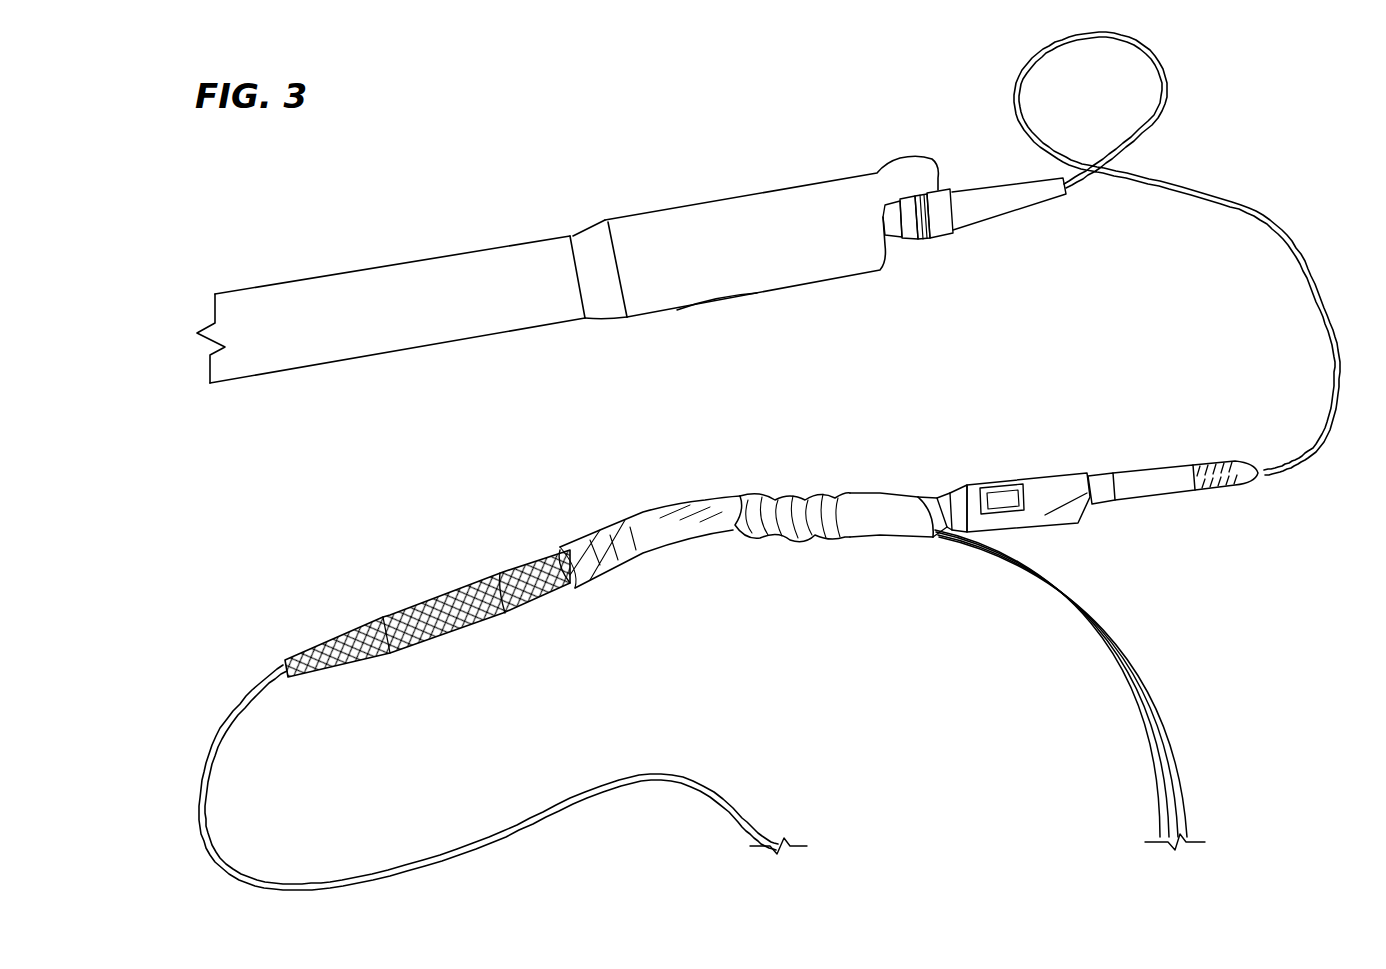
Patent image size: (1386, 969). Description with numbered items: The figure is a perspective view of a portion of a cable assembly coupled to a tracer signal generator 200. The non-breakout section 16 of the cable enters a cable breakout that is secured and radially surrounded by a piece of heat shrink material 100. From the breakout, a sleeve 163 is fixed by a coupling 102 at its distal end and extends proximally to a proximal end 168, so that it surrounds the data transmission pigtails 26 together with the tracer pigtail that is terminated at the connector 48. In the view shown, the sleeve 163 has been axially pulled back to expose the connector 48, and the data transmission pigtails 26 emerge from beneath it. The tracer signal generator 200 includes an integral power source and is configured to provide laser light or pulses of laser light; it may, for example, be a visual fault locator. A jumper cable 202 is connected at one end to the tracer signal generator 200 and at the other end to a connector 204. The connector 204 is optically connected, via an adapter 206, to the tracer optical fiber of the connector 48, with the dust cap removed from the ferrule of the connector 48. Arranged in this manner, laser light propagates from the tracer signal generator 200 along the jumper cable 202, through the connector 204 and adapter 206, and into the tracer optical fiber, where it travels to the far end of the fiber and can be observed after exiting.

The tracer signal generator 200 is at (623, 183).
The jumper cable 202 is at (1237, 200).
The connector 204 is at (1105, 493).
The adapter 206 is at (1047, 487).
The connector 48 is at (950, 503).
The proximal end 168 is at (922, 497).
The sleeve 163 is at (720, 512).
The heat shrink material 100 is at (353, 640).
The coupling 102 is at (518, 572).
The non-breakout section 16 is at (258, 687).
The data transmission pigtails 26 is at (1147, 687).